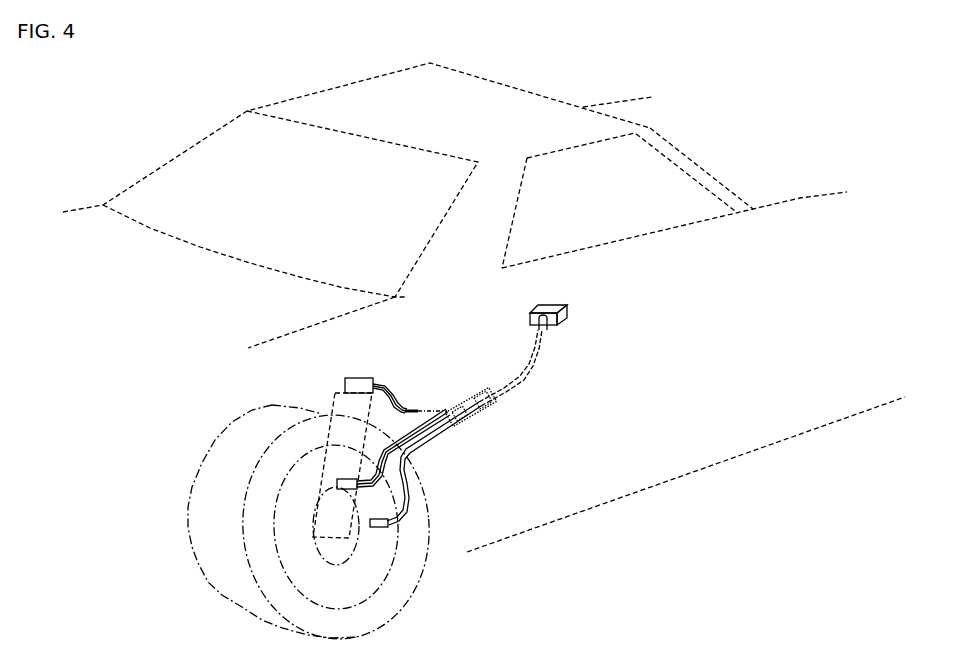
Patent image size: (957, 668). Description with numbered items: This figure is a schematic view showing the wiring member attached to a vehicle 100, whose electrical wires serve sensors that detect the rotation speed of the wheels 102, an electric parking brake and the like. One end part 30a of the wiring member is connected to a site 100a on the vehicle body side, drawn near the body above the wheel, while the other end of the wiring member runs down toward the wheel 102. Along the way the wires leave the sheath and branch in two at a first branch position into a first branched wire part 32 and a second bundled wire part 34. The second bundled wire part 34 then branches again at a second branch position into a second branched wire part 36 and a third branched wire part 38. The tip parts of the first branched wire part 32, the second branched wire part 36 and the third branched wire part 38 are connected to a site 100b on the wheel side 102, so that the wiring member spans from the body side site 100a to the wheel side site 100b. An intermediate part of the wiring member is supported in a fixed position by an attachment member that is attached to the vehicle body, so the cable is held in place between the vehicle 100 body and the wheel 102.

The vehicle 100 is at (729, 104).
The site on the vehicle body side 100a is at (589, 312).
The site on the wheel side 100b is at (327, 379).
The wheel 102 is at (686, 506).
The one end part of the wiring member 30a is at (556, 371).
The first branched wire part 32 is at (426, 514).
The second bundled wire part 34 is at (459, 391).
The second branched wire part 36 is at (398, 469).
The third branched wire part 38 is at (398, 370).